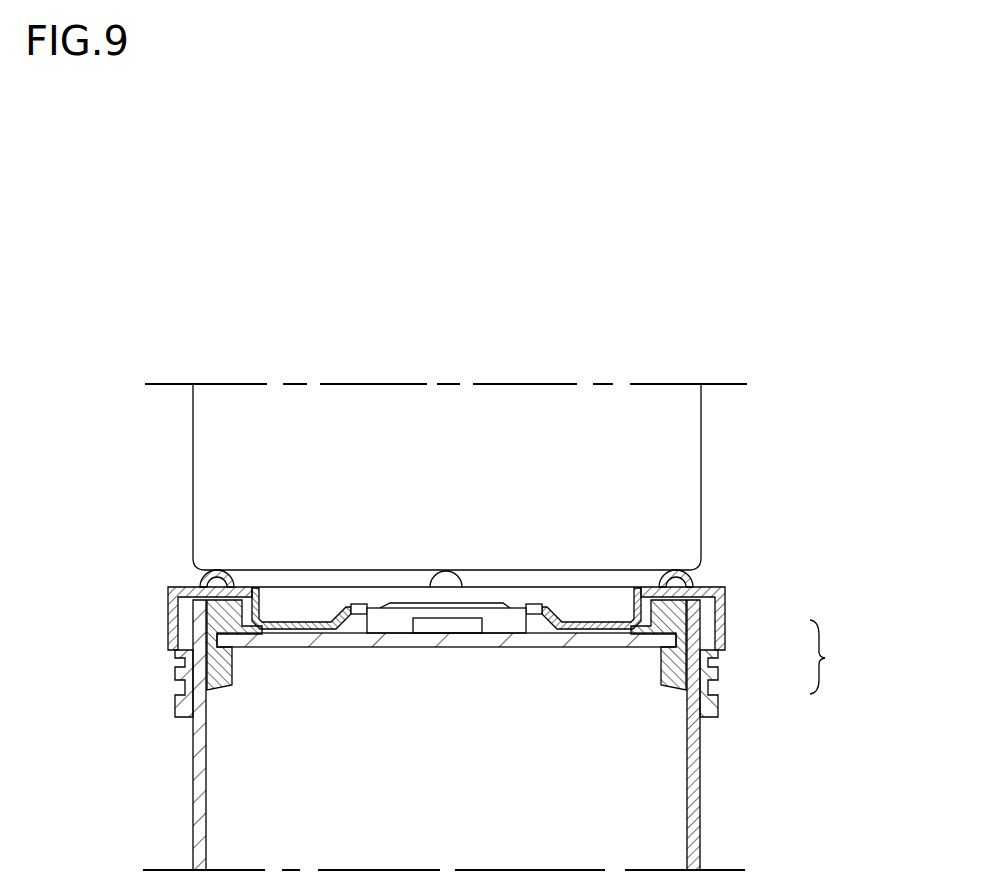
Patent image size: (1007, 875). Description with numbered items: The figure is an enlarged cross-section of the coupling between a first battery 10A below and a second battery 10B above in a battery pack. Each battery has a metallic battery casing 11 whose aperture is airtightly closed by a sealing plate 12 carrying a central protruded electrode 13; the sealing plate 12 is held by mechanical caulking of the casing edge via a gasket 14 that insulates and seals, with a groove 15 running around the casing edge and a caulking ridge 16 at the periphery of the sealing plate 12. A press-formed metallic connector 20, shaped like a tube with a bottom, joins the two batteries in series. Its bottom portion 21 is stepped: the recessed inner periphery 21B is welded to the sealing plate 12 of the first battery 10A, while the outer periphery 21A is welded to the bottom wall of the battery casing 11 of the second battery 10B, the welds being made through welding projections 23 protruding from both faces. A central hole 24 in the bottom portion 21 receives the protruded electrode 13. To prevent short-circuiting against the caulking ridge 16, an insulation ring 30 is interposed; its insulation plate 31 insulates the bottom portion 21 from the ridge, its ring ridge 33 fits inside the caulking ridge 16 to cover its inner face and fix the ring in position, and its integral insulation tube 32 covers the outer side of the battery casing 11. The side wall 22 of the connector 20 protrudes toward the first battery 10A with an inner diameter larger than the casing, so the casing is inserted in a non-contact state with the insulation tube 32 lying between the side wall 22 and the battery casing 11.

The first battery 10A is at (733, 836).
The second battery 10B is at (736, 439).
The battery casing 11 is at (193, 806).
The sealing plate 12 is at (540, 646).
The protruded electrode 13 is at (472, 603).
The gasket 14 is at (679, 665).
The groove 15 is at (702, 712).
The caulking ridge 16 is at (651, 656).
The connector 20 is at (763, 549).
The bottom portion 21 is at (382, 456).
The outer periphery 21A is at (250, 585).
The inner periphery 21B is at (337, 622).
The side wall 22 is at (170, 648).
The welding projections 23 is at (221, 570).
The central hole 24 is at (363, 596).
The insulation ring 30 is at (835, 657).
The insulation plate 31 is at (727, 617).
The insulation tube 32 is at (716, 668).
The ring ridge 33 is at (640, 628).